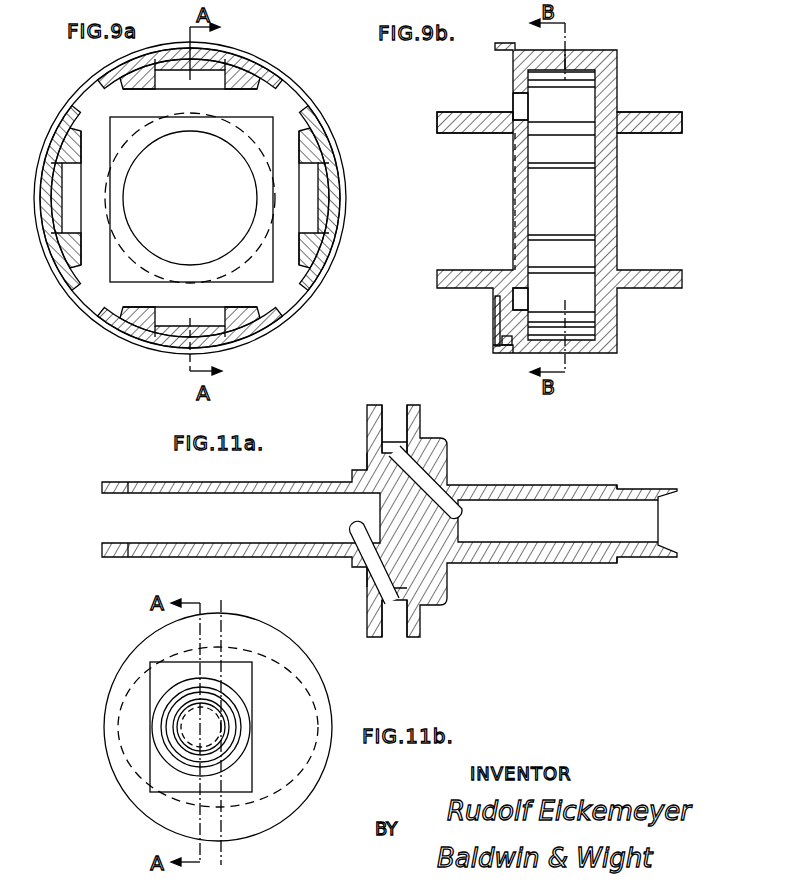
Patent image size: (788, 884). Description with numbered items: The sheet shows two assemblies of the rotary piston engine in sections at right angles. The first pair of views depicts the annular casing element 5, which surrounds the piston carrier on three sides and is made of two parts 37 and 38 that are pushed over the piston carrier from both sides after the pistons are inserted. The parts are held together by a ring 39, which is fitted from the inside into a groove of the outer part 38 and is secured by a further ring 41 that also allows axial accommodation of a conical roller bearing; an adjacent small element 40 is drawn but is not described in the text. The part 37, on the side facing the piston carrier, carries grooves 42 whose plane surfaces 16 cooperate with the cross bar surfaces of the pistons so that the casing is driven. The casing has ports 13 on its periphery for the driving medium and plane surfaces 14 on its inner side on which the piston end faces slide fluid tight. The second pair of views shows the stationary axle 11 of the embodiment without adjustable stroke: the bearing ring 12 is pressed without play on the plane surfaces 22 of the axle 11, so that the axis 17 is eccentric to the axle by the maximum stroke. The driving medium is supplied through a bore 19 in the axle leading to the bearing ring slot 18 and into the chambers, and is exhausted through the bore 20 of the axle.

In FIG. 9a, the annular casing element 5 is at (226, 184).
In FIG. 9b, the annular casing element 5 is at (586, 62).
In FIG. 9a, the ports 13 is at (186, 189).
In FIG. 9a, the plane surfaces 14 is at (192, 214).
In FIG. 9b, the plane surfaces 14 is at (568, 209).
In FIG. 9a, the plane surfaces 16 is at (186, 201).
In FIG. 9b, the plane surfaces 16 is at (525, 118).
In FIG. 9a, the casing part 37 is at (122, 59).
In FIG. 9b, the casing part 37 is at (460, 110).
In FIG. 9a, the outer casing part 38 is at (208, 198).
In FIG. 9b, the outer casing part 38 is at (648, 110).
In FIG. 9b, the ring 39 is at (504, 339).
In FIG. 9b, the retaining ring 40 is at (504, 348).
In FIG. 9b, the ring 41 is at (497, 307).
In FIG. 9a, the grooves 42 is at (195, 198).
In FIG. 11a, the stationary axle 11 is at (503, 482).
In FIG. 11b, the stationary axle 11 is at (197, 848).
In FIG. 11a, the bearing ring 12 is at (367, 418).
In FIG. 11b, the bearing ring 12 is at (305, 733).
In FIG. 11b, the axis 17 is at (222, 850).
In FIG. 11a, the bearing ring slot 18 is at (394, 420).
In FIG. 11a, the bore 19 is at (277, 513).
In FIG. 11a, the bore 20 is at (432, 478).
In FIG. 11a, the plane surfaces 22 is at (372, 446).